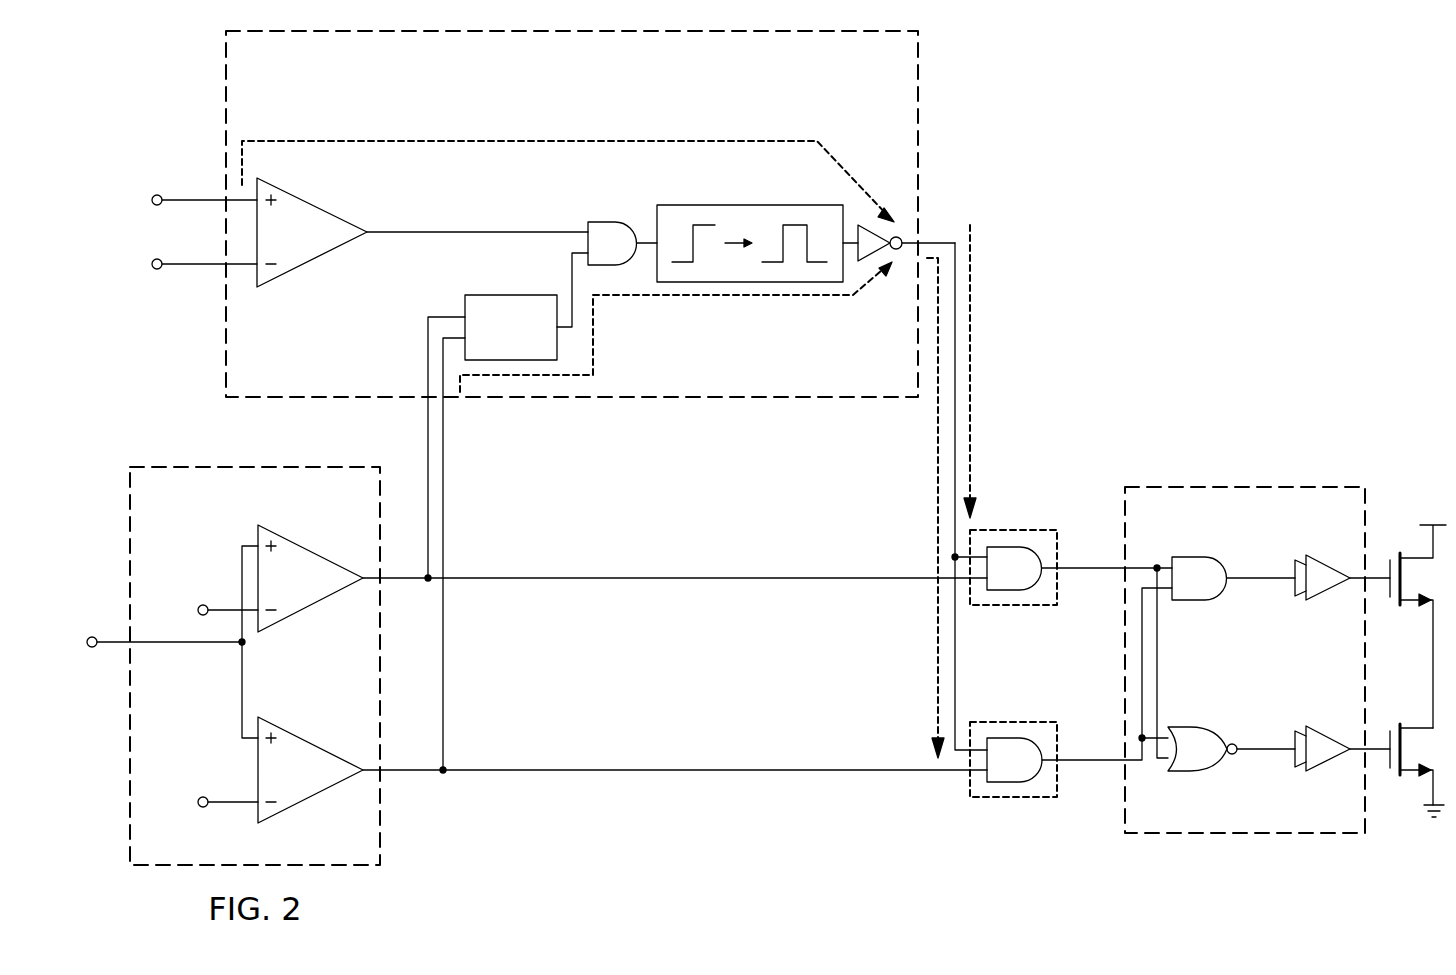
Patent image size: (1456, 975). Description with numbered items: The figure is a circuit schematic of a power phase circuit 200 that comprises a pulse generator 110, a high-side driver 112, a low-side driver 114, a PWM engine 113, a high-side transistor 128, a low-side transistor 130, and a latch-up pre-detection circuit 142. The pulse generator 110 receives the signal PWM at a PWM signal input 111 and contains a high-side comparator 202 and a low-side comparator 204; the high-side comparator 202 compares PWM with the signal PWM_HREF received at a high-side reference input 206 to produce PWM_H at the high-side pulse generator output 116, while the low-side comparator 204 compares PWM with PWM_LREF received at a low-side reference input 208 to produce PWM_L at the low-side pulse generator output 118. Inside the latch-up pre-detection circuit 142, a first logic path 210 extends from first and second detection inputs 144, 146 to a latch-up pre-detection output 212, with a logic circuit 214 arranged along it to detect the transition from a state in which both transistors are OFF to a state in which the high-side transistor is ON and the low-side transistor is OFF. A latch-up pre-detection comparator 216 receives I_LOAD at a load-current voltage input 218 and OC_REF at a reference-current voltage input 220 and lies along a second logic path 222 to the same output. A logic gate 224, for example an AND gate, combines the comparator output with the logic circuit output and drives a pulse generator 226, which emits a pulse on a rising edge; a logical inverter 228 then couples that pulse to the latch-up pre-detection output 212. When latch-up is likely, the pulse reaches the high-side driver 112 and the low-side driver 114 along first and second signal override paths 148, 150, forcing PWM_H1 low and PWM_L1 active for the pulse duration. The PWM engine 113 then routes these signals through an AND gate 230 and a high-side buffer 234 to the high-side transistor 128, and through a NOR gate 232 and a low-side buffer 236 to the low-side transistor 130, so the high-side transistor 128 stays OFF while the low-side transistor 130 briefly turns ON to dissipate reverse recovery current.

The power phase circuit 200 is at (1115, 93).
The latch-up pre-detection circuit 142 is at (226, 107).
The second logic path 222 is at (510, 138).
The first logic path 210 is at (740, 297).
The logical inverter 228 is at (880, 270).
The latch-up pre-detection comparator 216 is at (310, 208).
The load-current voltage input 218 is at (198, 198).
The reference-current voltage input 220 is at (196, 262).
The logic gate 224 is at (604, 220).
The logic circuit 214 is at (508, 294).
The pulse generator 226 is at (750, 204).
The latch-up pre-detection output 212 is at (920, 240).
The first signal override path 148 is at (972, 357).
The second signal override path 150 is at (933, 502).
The pulse generator 110 is at (130, 728).
The PWM signal input 111 is at (105, 650).
The high-side comparator 202 is at (313, 608).
The high-side reference input 206 is at (225, 607).
The low-side comparator 204 is at (313, 798).
The low-side reference input 208 is at (225, 808).
The high-side pulse generator output 116 is at (428, 582).
The low-side pulse generator output 118 is at (443, 774).
The first detection input 144 is at (428, 430).
The second detection input 146 is at (445, 680).
The high-side driver 112 is at (1022, 608).
The low-side driver 114 is at (1022, 800).
The PWM engine 113 is at (1285, 836).
The AND gate 230 is at (1197, 602).
The high-side buffer 234 is at (1332, 598).
The high-side transistor 128 is at (1396, 598).
The NOR gate 232 is at (1197, 772).
The low-side buffer 236 is at (1334, 769).
The low-side transistor 130 is at (1394, 769).